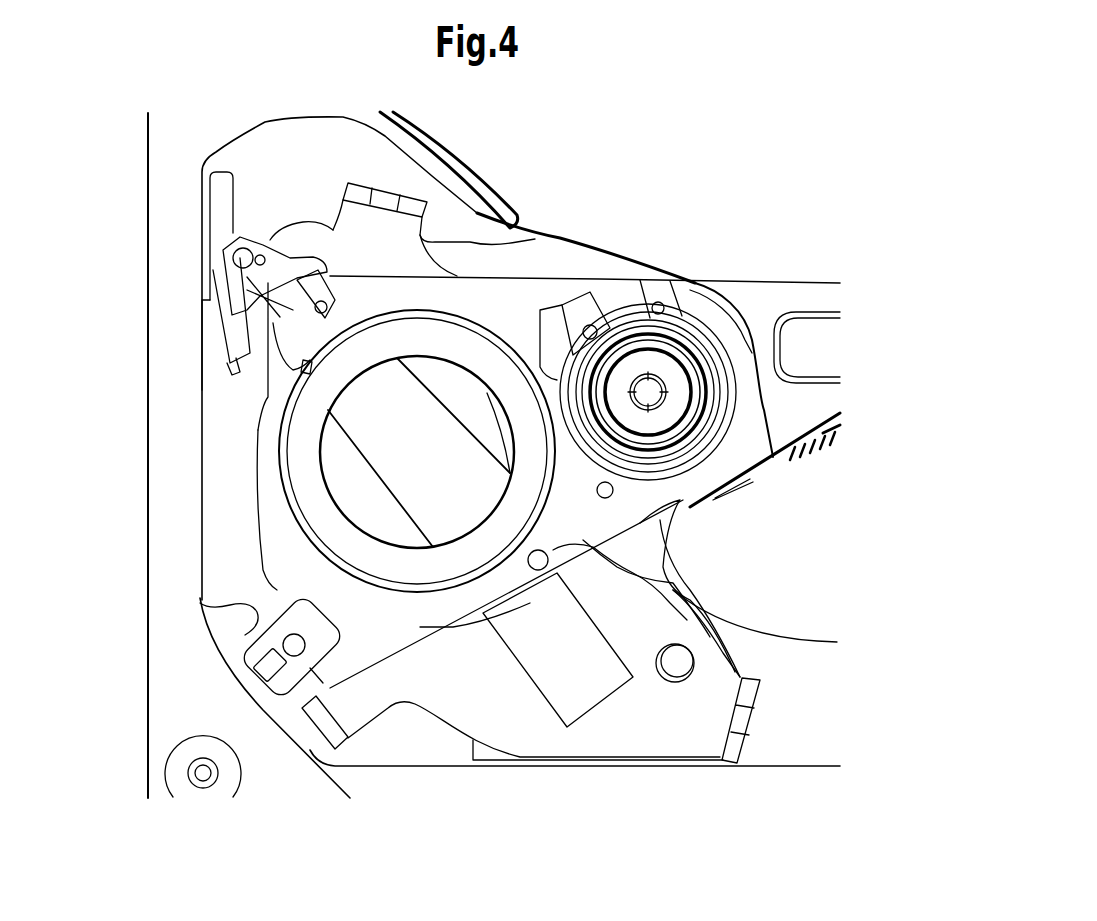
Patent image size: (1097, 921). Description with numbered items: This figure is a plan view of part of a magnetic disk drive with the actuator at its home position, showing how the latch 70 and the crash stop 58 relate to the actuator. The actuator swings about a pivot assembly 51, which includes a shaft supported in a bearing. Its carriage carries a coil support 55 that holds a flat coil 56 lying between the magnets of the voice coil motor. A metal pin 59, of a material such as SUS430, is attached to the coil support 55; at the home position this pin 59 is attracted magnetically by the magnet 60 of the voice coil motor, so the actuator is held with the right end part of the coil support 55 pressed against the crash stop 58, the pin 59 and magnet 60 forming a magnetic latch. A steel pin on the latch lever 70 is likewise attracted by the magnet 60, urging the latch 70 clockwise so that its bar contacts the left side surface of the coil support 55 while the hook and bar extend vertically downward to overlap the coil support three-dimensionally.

The pivot assembly 51 is at (673, 384).
The coil support 55 is at (380, 295).
The flat coil 56 is at (307, 480).
The crash stop 58 is at (320, 640).
The pin 59 is at (612, 560).
The magnet 60 is at (587, 688).
The latch lever 70 is at (214, 226).